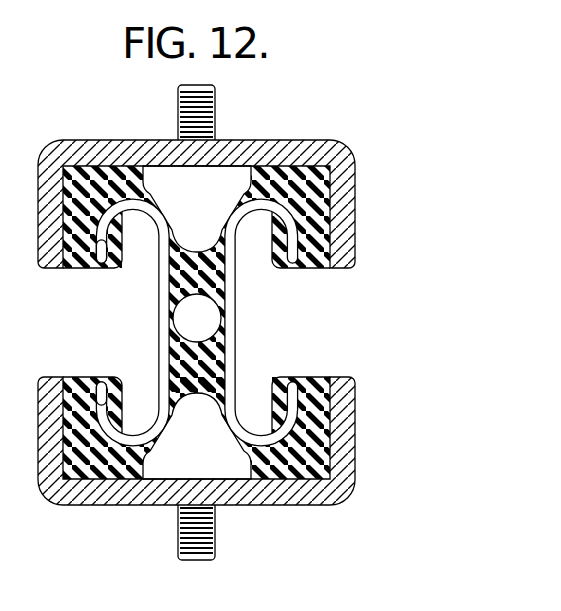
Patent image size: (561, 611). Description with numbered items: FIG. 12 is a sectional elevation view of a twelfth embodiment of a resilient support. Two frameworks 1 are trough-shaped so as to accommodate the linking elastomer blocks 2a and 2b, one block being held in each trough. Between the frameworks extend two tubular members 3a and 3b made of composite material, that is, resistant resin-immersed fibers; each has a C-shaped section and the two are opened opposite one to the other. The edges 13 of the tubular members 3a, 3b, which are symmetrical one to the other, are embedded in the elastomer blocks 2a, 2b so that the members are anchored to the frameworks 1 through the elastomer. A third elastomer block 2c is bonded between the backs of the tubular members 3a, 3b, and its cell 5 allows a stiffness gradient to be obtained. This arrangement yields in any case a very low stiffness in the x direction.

The framework 1 is at (238, 147).
The elastomer block 2a is at (342, 258).
The elastomer block 2b is at (321, 383).
The third elastomer block 2c is at (216, 366).
The tubular member 3a is at (163, 303).
The tubular member 3b is at (229, 303).
The cell 5 is at (187, 336).
The edge 13 is at (94, 384).